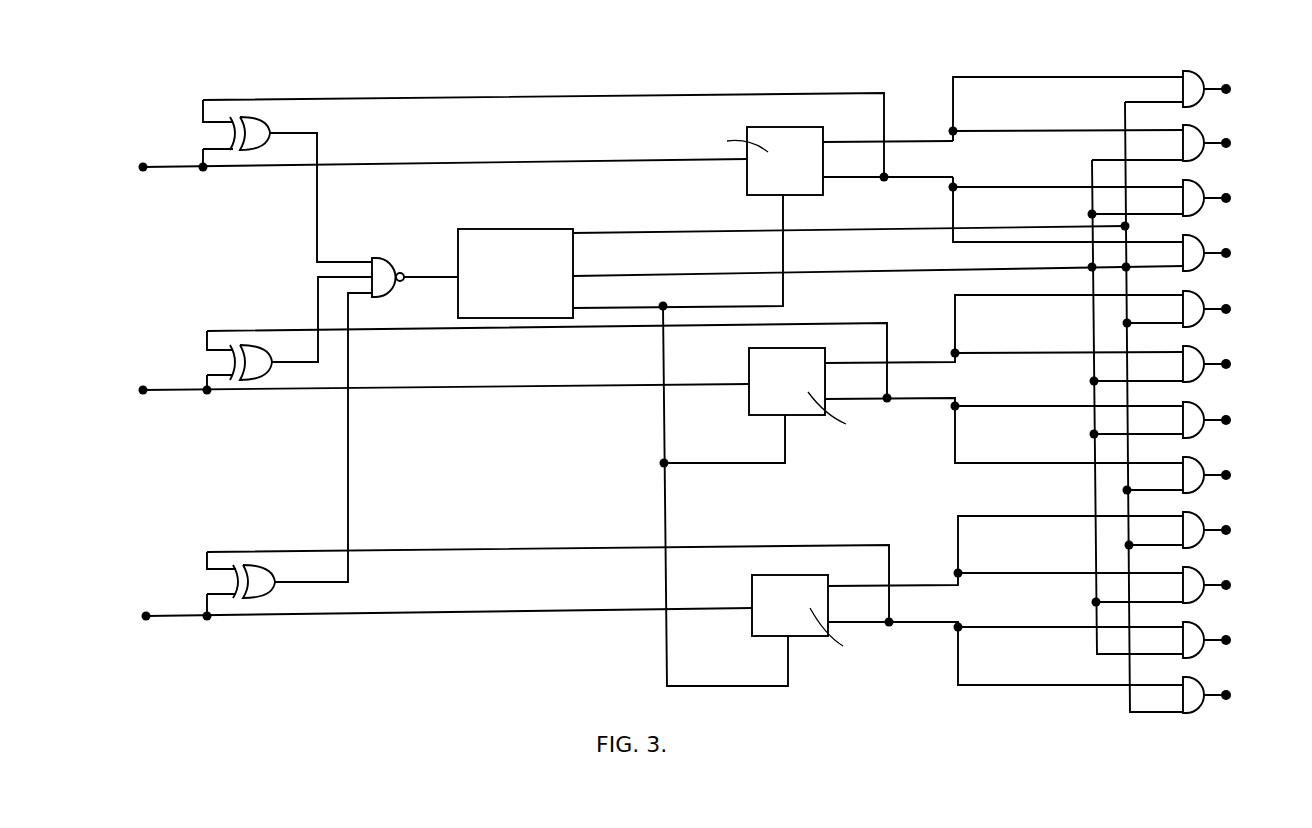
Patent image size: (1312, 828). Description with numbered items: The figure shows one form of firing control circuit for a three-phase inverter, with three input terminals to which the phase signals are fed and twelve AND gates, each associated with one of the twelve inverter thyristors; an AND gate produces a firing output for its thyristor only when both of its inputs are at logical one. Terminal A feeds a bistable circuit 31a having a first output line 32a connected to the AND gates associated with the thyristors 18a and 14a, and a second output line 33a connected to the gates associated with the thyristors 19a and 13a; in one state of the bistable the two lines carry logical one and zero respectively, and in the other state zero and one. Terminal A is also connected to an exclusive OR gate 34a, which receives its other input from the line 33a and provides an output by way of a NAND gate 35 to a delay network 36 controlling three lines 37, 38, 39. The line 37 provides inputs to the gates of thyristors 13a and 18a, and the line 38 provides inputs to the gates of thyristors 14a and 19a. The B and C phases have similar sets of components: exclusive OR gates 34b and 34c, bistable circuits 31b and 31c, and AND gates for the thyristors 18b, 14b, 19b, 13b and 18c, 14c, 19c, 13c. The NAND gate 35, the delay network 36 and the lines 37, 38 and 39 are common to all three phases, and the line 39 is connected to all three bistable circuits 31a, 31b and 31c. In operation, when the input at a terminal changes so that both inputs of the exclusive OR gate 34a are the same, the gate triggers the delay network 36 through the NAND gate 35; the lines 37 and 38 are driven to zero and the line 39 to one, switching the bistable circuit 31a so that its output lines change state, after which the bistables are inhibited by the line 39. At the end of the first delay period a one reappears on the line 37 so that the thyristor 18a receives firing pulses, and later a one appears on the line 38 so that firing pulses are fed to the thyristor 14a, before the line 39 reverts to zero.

The exclusive OR gate 34a is at (263, 118).
The exclusive OR gate 34b is at (251, 343).
The exclusive OR gate 34c is at (257, 566).
The NAND gate 35 is at (380, 253).
The delay network 36 is at (505, 245).
The line 37 is at (636, 232).
The line 38 is at (640, 275).
The line 39 is at (698, 307).
The bistable circuit 31a is at (770, 150).
The bistable circuit 31b is at (806, 402).
The bistable circuit 31c is at (808, 617).
The first output line 32a is at (910, 139).
The second output line 33a is at (912, 180).
The thyristor 18a is at (1232, 89).
The thyristor 14a is at (1232, 143).
The thyristor 19a is at (1232, 198).
The thyristor 13a is at (1232, 253).
The thyristor 18b is at (1232, 309).
The thyristor 14b is at (1232, 364).
The thyristor 19b is at (1232, 420).
The thyristor 13b is at (1232, 475).
The thyristor 18c is at (1231, 530).
The thyristor 14c is at (1231, 585).
The thyristor 19c is at (1231, 640).
The thyristor 13c is at (1231, 695).